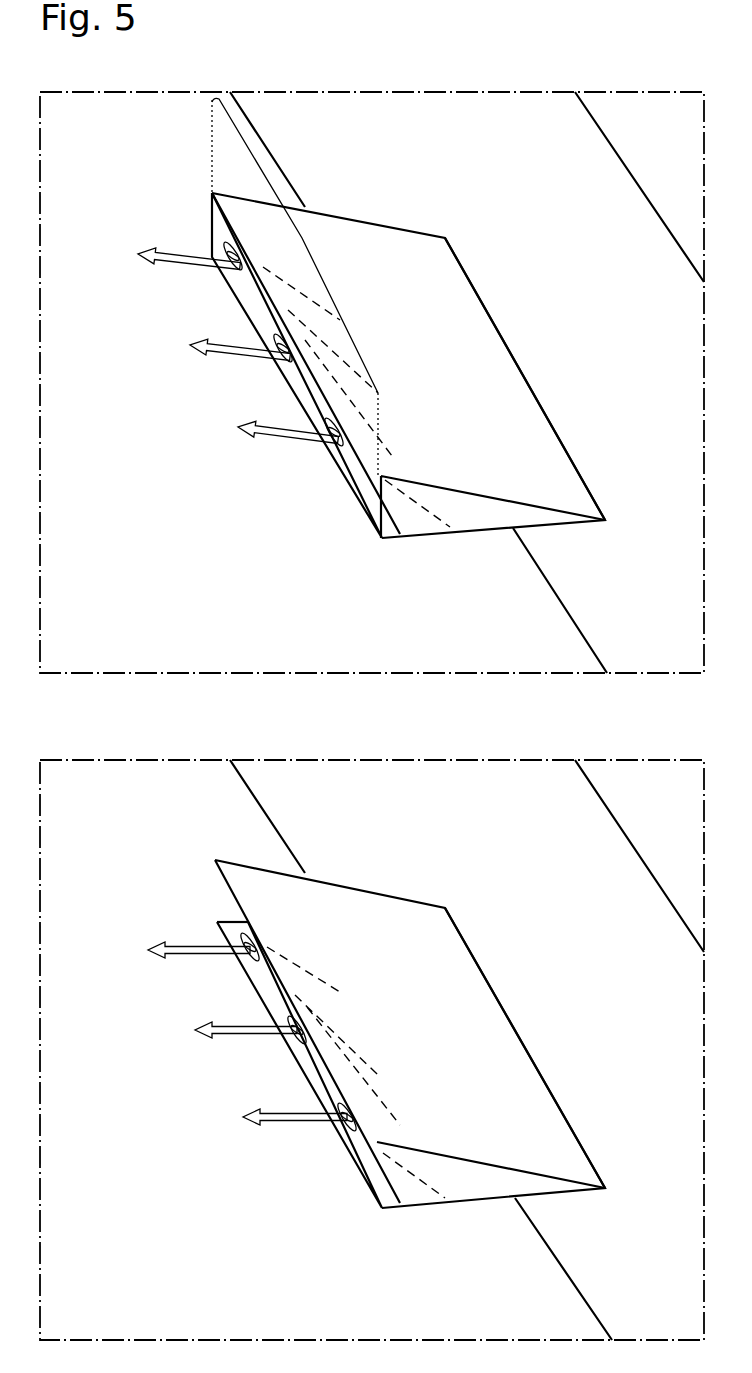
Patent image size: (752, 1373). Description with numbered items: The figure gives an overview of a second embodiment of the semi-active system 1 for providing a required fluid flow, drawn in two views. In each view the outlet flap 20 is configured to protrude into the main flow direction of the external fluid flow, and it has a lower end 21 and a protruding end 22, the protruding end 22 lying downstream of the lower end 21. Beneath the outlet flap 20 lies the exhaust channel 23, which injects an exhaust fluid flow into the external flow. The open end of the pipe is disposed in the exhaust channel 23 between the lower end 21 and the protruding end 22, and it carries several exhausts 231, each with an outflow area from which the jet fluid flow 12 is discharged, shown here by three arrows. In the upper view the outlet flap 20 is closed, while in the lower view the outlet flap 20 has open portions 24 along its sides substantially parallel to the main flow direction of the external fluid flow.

The semi-active system 1 is at (380, 65).
The jet fluid flow 12 is at (177, 252).
The outlet flap 20 is at (468, 356).
The lower end 21 is at (573, 453).
The protruding end 22 is at (470, 491).
The exhaust channel 23 is at (302, 238).
The exhaust 231 is at (333, 456).
The open portions 24 is at (217, 902).